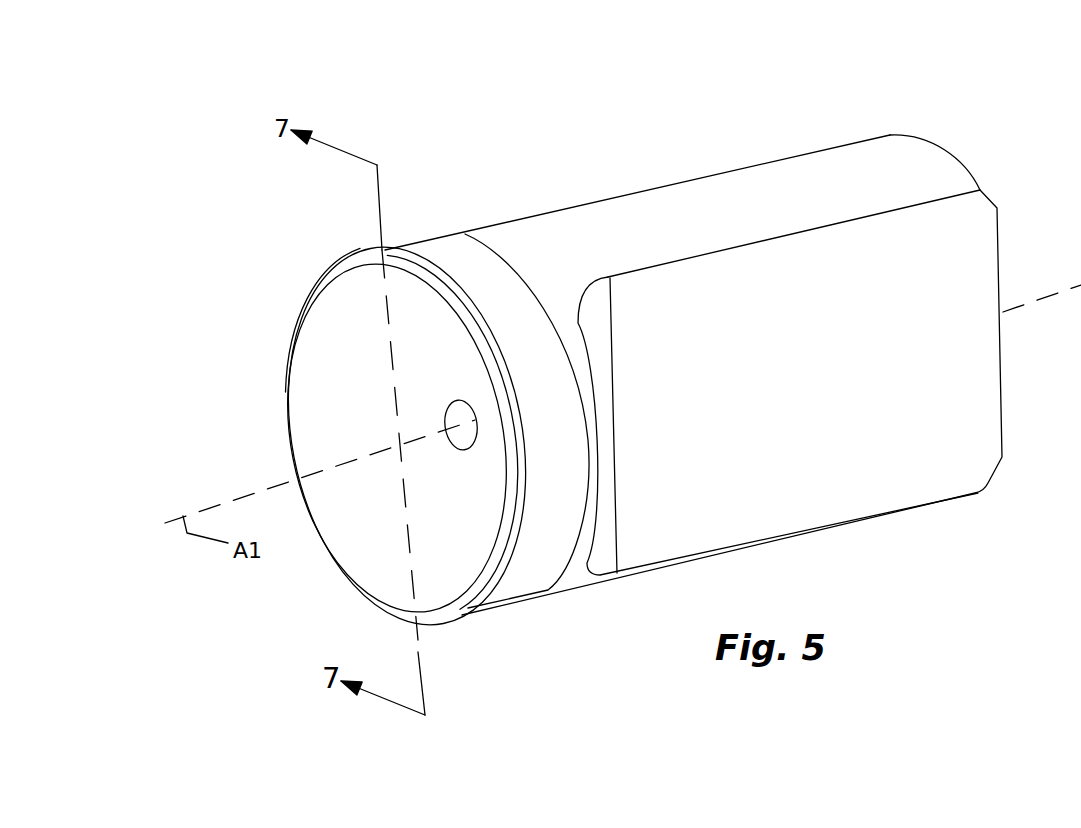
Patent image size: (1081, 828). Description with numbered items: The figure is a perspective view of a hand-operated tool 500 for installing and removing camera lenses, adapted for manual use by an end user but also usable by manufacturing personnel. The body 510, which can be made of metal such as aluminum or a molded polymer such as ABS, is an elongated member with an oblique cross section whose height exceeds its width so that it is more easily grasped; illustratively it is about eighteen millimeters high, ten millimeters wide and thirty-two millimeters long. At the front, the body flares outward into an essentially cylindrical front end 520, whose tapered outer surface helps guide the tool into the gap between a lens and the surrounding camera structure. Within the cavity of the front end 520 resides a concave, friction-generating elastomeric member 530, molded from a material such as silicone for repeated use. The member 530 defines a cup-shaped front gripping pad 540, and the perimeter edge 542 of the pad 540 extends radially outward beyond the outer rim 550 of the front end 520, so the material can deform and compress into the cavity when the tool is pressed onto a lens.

The tool 500 is at (690, 158).
The body 510 is at (847, 153).
The front end 520 is at (459, 258).
The elastomeric member 530 is at (450, 575).
The front gripping pad 540 is at (304, 388).
The perimeter edge 542 is at (327, 273).
The outer rim 550 is at (503, 581).